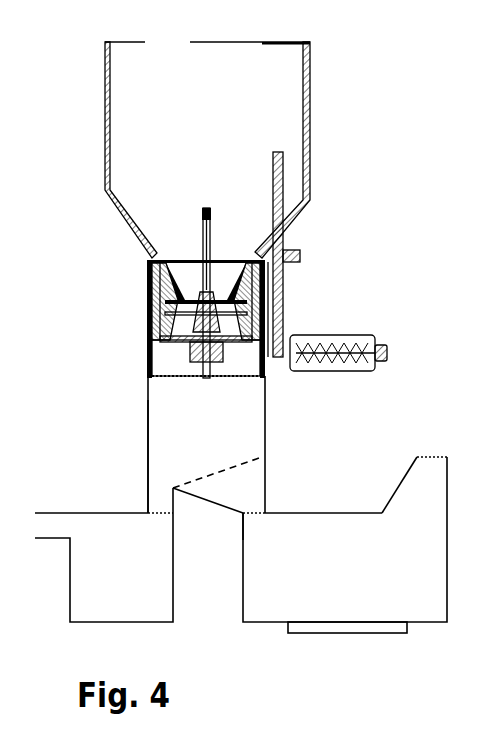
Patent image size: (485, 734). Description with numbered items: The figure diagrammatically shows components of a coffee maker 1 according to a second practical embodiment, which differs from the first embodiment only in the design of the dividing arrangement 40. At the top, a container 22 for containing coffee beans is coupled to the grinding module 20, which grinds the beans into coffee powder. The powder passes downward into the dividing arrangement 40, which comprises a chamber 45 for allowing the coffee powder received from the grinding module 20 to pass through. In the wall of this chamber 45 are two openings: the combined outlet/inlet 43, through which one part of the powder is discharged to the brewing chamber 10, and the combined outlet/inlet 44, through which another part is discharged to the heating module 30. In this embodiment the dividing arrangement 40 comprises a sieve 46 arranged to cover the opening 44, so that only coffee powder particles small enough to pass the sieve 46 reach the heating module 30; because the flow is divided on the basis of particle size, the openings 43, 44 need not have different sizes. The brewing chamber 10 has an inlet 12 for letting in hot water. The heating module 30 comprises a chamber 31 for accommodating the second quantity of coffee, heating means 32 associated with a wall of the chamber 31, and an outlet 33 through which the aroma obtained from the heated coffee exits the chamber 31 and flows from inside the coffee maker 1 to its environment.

The coffee maker 1 is at (356, 107).
The container 22 is at (138, 163).
The grinding module 20 is at (193, 315).
The dividing arrangement 40 is at (158, 430).
The chamber 45 is at (162, 460).
The sieve 46 is at (232, 463).
The combined outlet/inlet 43 is at (162, 510).
The combined outlet/inlet 44 is at (253, 512).
The inlet 12 is at (52, 525).
The brewing chamber 10 is at (94, 578).
The heating module 30 is at (340, 522).
The chamber 31 is at (371, 537).
The outlet 33 is at (431, 455).
The heating means 32 is at (352, 628).